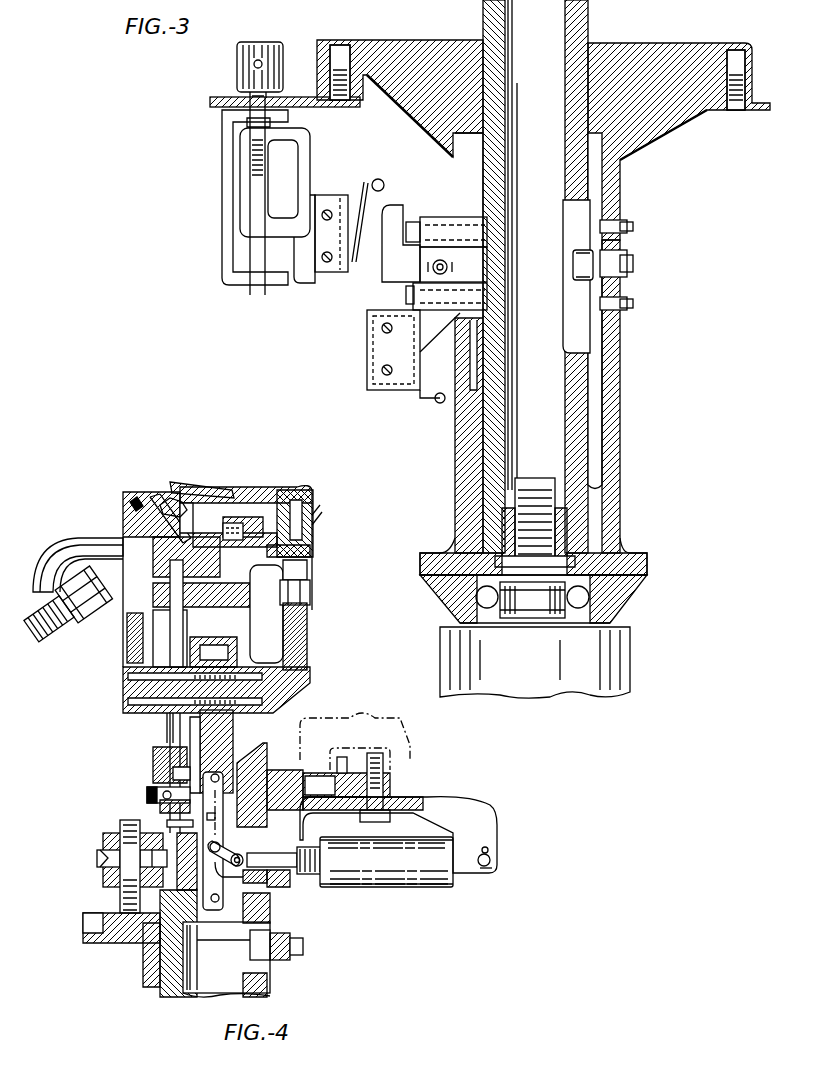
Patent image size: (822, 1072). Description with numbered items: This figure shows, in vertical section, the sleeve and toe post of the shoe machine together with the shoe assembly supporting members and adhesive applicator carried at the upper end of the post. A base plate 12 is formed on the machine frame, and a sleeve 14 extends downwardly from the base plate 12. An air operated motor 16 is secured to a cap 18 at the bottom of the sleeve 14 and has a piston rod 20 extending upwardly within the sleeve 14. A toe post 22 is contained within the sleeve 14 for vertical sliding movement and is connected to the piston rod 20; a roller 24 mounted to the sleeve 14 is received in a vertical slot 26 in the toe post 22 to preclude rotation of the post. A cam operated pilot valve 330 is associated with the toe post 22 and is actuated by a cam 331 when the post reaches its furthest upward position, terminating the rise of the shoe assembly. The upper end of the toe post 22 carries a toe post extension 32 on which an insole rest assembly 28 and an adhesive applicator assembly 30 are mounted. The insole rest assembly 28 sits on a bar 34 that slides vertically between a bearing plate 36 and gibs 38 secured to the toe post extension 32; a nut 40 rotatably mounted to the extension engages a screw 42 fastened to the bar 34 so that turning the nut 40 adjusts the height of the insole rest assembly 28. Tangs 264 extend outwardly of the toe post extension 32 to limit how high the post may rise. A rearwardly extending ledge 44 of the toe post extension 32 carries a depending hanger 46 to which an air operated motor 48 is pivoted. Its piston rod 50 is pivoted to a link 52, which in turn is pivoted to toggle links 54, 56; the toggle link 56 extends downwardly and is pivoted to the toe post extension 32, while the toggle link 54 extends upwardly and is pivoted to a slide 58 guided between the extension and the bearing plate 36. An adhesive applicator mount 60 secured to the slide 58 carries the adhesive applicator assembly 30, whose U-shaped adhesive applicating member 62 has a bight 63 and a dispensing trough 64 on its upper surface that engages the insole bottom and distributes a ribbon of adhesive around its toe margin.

In FIG. 3, the base plate 12 is at (633, 55).
In FIG. 3, the sleeve 14 is at (610, 432).
In FIG. 3, the air operated motor 16 is at (604, 670).
In FIG. 3, the cap 18 is at (622, 597).
In FIG. 3, the piston rod 20 is at (530, 500).
In FIG. 3, the toe post 22 is at (580, 30).
In FIG. 4, the toe post 22 is at (172, 990).
In FIG. 3, the roller 24 is at (575, 262).
In FIG. 3, the vertical slot 26 is at (572, 332).
In FIG. 4, the insole rest assembly 28 is at (256, 483).
In FIG. 4, the adhesive applicator assembly 30 is at (322, 470).
In FIG. 4, the toe post extension 32 is at (248, 765).
In FIG. 4, the bar 34 is at (178, 575).
In FIG. 4, the bearing plate 36 is at (198, 660).
In FIG. 4, the gibs 38 is at (165, 727).
In FIG. 4, the nut 40 is at (150, 794).
In FIG. 4, the screw 42 is at (158, 775).
In FIG. 4, the ledge 44 is at (285, 780).
In FIG. 4, the hanger 46 is at (456, 818).
In FIG. 4, the air operated motor 48 is at (405, 875).
In FIG. 4, the piston rod 50 is at (300, 878).
In FIG. 4, the link 52 is at (228, 853).
In FIG. 4, the toggle link 54 is at (218, 822).
In FIG. 4, the toggle link 56 is at (215, 865).
In FIG. 4, the slide 58 is at (220, 745).
In FIG. 4, the adhesive applicator mount 60 is at (288, 690).
In FIG. 4, the adhesive applicating member 62 is at (316, 498).
In FIG. 4, the bight 63 is at (322, 508).
In FIG. 4, the dispensing trough 64 is at (300, 480).
In FIG. 4, the tangs 264 is at (168, 828).
In FIG. 3, the cam operated pilot valve 330 is at (346, 195).
In FIG. 3, the cam 331 is at (390, 208).